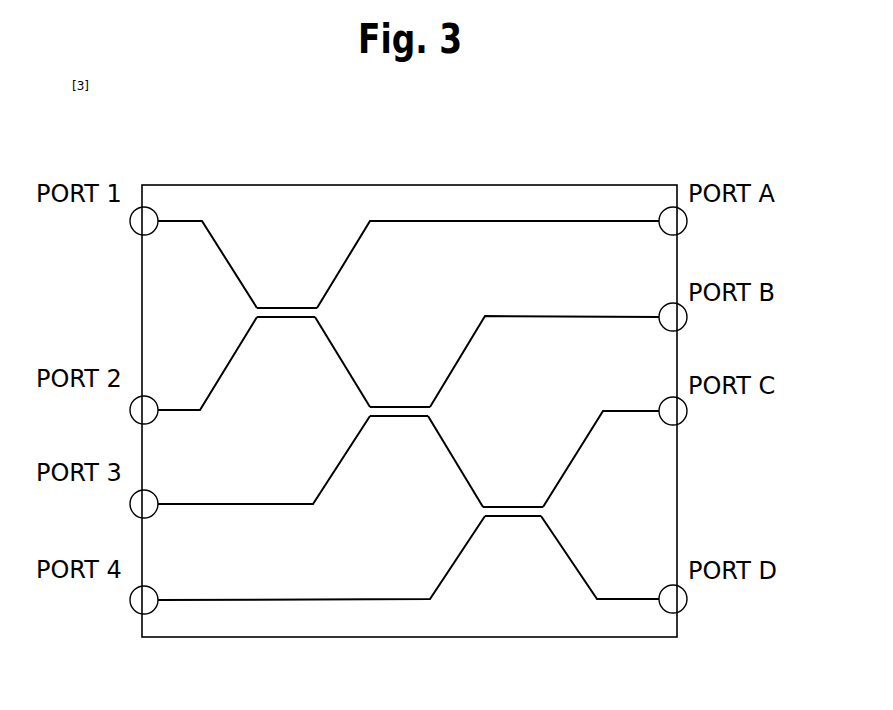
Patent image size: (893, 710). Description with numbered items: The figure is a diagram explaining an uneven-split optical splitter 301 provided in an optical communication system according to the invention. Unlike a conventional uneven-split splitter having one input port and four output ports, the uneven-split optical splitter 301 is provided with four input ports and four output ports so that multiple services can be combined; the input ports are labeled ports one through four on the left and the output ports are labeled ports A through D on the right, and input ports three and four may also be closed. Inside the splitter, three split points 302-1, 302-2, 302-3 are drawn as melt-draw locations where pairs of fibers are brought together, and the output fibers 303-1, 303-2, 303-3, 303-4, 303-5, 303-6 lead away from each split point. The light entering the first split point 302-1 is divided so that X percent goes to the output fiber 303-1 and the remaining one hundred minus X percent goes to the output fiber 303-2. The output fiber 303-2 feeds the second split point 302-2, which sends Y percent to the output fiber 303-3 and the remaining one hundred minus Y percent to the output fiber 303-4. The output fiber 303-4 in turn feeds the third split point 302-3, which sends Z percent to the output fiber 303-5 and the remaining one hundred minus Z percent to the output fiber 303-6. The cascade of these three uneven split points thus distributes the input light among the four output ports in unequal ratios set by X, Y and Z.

The uneven-split optical splitter 301 is at (303, 183).
The split point 302-1 is at (275, 319).
The split point 302-2 is at (387, 423).
The split point 302-3 is at (505, 519).
The output fiber 303-1 is at (343, 272).
The output fiber 303-2 is at (345, 357).
The output fiber 303-3 is at (452, 370).
The output fiber 303-4 is at (453, 453).
The output fiber 303-5 is at (567, 475).
The output fiber 303-6 is at (578, 556).